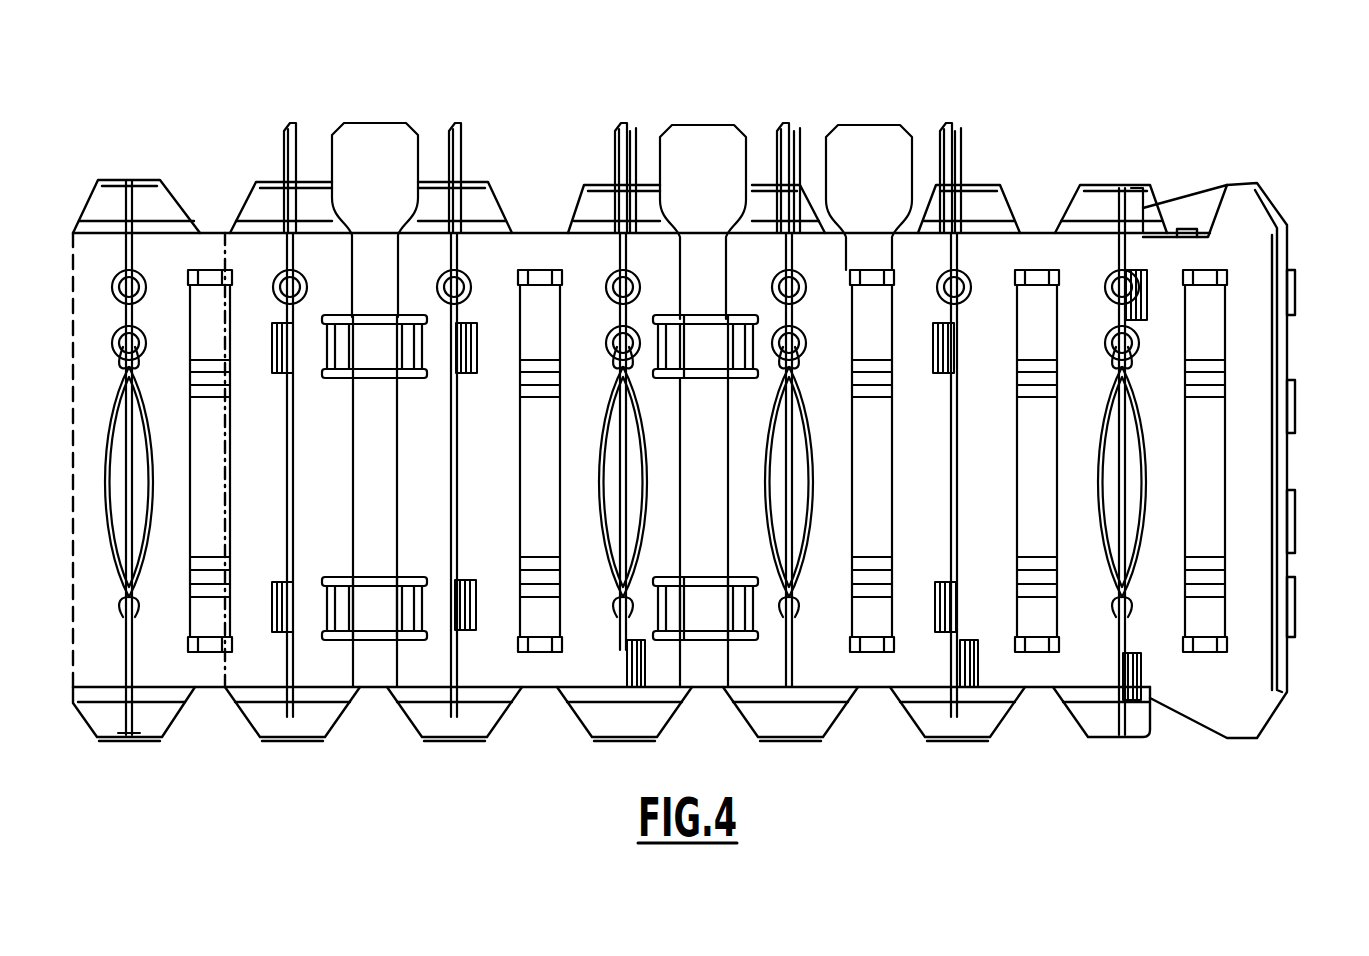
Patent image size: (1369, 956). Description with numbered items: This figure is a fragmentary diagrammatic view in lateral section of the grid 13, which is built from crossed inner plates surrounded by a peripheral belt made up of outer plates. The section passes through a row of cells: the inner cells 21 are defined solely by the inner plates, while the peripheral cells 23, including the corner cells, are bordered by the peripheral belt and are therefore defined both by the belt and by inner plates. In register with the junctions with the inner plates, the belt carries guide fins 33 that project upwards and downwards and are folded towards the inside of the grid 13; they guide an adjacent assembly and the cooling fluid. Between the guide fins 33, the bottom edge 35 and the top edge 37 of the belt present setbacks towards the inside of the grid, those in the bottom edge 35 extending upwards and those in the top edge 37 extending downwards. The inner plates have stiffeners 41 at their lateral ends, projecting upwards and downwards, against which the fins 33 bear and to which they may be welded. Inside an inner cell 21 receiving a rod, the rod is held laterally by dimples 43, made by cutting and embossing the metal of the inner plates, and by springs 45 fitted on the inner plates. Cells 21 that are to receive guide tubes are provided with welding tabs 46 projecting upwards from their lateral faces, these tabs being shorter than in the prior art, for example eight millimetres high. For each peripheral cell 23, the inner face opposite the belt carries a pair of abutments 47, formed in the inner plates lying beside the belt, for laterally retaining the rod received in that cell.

The grid 13 is at (720, 443).
The inner cells 21 is at (818, 260).
The peripheral cells 23 is at (1172, 272).
The guide fins 33 is at (480, 205).
The bottom edge 35 is at (133, 742).
The top edge 37 is at (143, 172).
The stiffeners 41 is at (1242, 208).
The dimples 43 is at (990, 625).
The springs 45 is at (877, 453).
The welding tabs 46 is at (445, 140).
The abutments 47 is at (1150, 212).